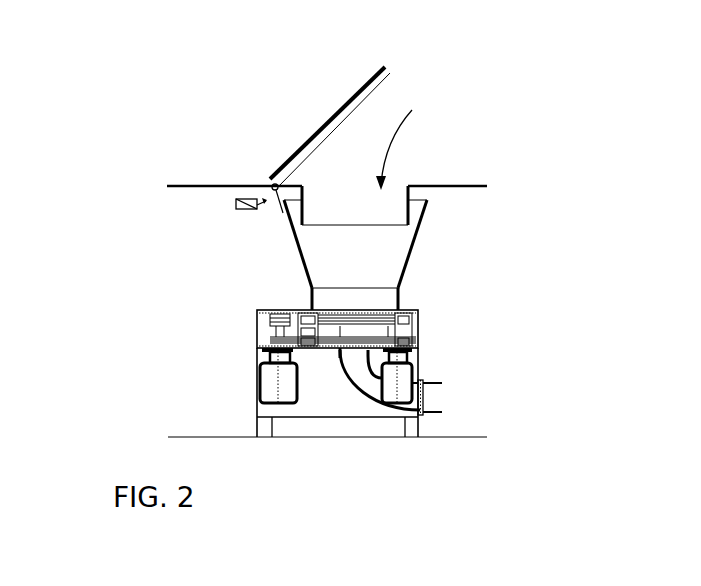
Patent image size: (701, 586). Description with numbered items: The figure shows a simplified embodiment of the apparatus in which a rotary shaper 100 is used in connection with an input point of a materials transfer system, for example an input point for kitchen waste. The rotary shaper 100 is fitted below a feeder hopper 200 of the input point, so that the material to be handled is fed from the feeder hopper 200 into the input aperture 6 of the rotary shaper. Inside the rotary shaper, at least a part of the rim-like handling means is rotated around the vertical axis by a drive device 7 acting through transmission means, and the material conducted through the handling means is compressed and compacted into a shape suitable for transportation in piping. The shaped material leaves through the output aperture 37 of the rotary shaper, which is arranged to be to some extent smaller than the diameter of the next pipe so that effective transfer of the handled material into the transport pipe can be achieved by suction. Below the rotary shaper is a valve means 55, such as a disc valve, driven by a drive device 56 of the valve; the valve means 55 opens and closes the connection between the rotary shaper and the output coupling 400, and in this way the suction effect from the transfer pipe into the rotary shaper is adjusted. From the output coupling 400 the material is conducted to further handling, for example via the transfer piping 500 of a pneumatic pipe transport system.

The input aperture 6 is at (360, 286).
The drive device 7 is at (265, 393).
The output aperture 37 is at (345, 350).
The valve means 55 is at (408, 348).
The drive device of the valve 56 is at (407, 370).
The rotary shaper 100 is at (243, 333).
The feeder hopper 200 is at (312, 260).
The output coupling 400 is at (365, 392).
The transfer piping 500 is at (433, 412).